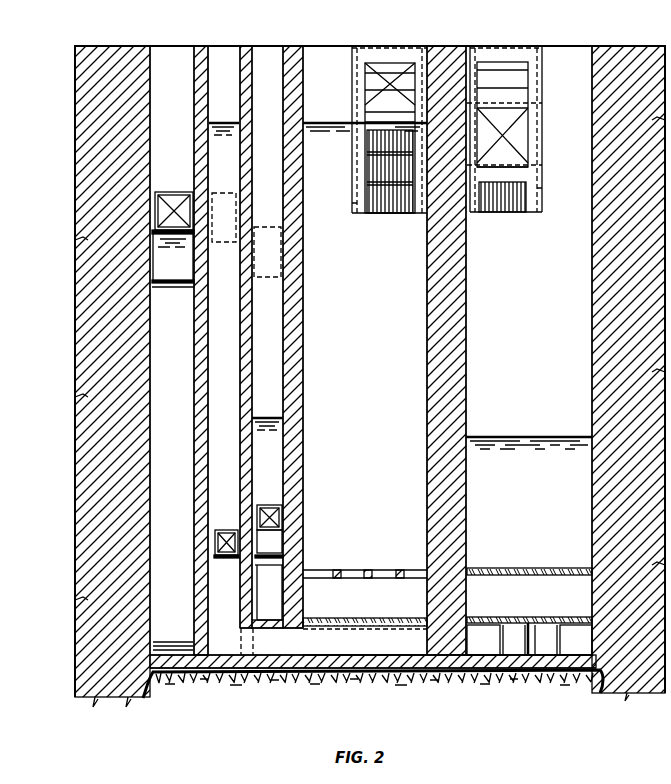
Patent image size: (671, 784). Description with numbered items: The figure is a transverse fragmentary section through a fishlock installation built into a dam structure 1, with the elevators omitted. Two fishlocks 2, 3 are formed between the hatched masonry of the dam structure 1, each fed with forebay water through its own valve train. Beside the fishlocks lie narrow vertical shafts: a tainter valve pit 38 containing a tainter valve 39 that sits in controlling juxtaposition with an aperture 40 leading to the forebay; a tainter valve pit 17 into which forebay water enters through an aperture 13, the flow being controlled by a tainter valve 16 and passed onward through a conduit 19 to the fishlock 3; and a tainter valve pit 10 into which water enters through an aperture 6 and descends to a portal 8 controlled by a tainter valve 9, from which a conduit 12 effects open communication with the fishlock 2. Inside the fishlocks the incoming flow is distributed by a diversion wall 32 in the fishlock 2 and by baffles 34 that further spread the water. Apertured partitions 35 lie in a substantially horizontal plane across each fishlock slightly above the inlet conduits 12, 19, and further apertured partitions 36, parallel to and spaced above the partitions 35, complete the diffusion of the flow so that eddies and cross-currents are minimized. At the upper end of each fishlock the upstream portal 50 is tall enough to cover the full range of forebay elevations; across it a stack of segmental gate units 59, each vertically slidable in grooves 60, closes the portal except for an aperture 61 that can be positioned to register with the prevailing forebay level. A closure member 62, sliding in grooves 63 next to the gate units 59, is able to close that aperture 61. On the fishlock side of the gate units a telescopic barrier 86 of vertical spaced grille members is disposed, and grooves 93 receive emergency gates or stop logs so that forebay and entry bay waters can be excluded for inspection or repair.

The dam structure 1 is at (370, 376).
The fishlock 2 is at (529, 502).
The fishlock 3 is at (365, 389).
The aperture 6 is at (265, 230).
The portal 8 is at (269, 547).
The tainter valve 9 is at (268, 508).
The tainter valve pit 10 is at (267, 251).
The conduit 12 is at (270, 637).
The aperture 13 is at (226, 196).
The tainter valve 16 is at (236, 514).
The tainter valve pit 17 is at (224, 104).
The conduit 19 is at (365, 639).
The diversion wall 32 is at (530, 617).
The baffles 34 is at (529, 640).
The apertured partitions 35 is at (340, 618).
The apertured partitions 36 is at (340, 570).
The tainter valve pit 38 is at (173, 361).
The tainter valve 39 is at (176, 193).
The aperture 40 is at (173, 260).
The upstream portal 50 is at (525, 120).
The segmental gate units 59 is at (372, 100).
The grooves 60 is at (372, 80).
The aperture 61 is at (370, 117).
The closure member 62 is at (388, 61).
The grooves 63 is at (352, 50).
The barrier 86 is at (385, 200).
The grooves 93 is at (352, 203).